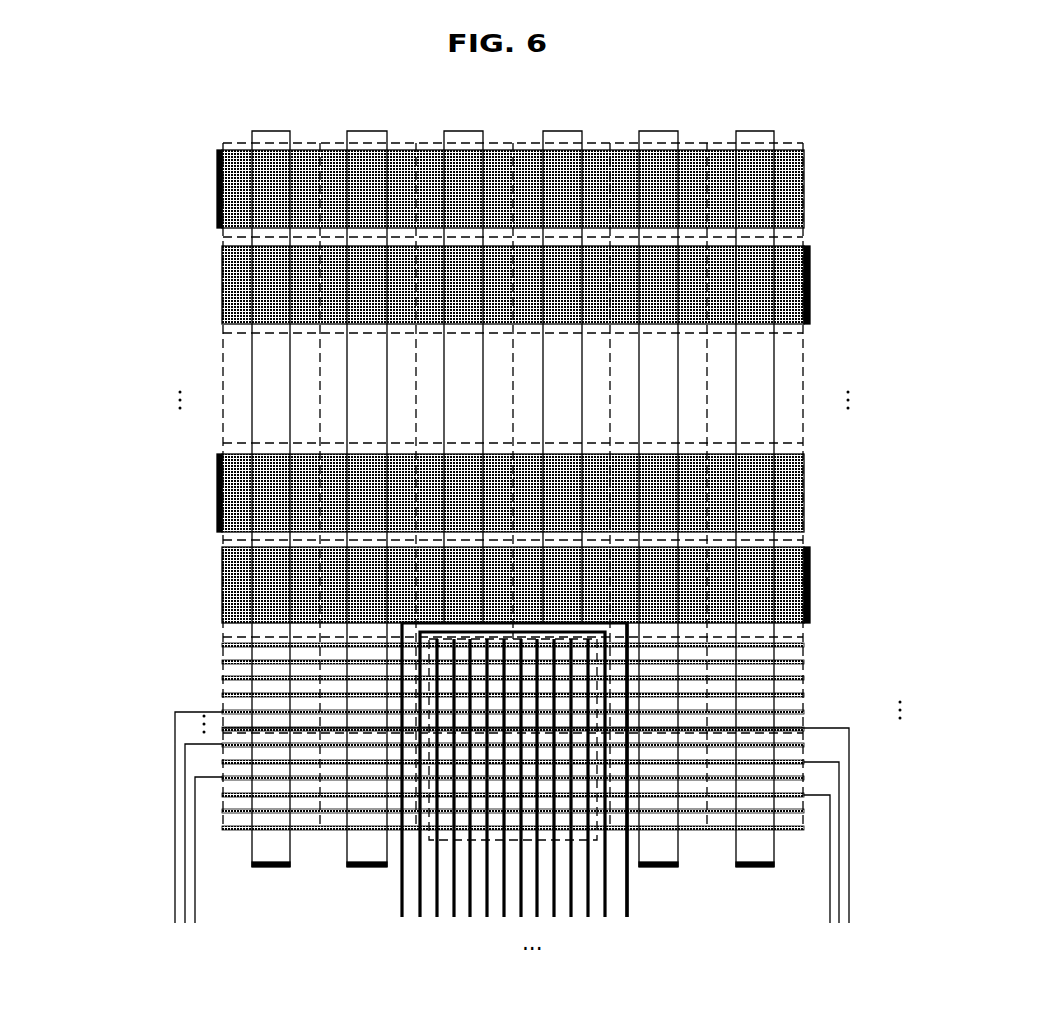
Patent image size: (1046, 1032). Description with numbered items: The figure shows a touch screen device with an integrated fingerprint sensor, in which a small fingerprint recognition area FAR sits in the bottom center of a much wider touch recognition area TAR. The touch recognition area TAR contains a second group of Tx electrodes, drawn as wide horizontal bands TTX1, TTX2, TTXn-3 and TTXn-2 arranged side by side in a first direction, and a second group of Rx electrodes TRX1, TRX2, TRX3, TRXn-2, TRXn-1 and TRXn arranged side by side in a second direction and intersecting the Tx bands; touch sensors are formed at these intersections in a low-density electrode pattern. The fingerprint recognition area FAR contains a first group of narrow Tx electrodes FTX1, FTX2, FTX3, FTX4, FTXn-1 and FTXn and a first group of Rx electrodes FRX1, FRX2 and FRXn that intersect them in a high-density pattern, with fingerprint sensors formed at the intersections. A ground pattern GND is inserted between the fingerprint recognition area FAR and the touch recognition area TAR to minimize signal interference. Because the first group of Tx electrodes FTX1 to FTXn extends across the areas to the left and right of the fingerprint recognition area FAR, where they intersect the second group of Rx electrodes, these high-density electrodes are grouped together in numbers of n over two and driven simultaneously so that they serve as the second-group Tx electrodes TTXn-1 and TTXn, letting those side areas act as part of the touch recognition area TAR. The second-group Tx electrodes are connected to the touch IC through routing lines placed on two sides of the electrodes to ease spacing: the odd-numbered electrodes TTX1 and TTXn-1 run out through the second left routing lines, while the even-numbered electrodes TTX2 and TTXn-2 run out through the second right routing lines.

The Tx electrode of the second group TTX1 is at (134, 923).
The Tx electrode of the second group TTX2 is at (891, 923).
The Tx electrode of the second group TTXn-3 is at (144, 923).
The Tx electrode of the second group TTXn-2 is at (880, 923).
The Tx electrode of the second group TTXn-1 is at (222, 738).
The Tx electrode of the second group TTXn is at (902, 738).
The touch recognition area TAR is at (913, 150).
The ground pattern GND is at (513, 632).
The fingerprint recognition area FAR is at (513, 840).
The Tx electrode of the first group FTX1 is at (155, 923).
The Tx electrode of the first group FTX2 is at (869, 923).
The Tx electrode of the first group FTX3 is at (165, 923).
The Tx electrode of the first group FTX4 is at (856, 923).
The Tx electrode of the first group FTXn-1 is at (205, 923).
The Tx electrode of the first group FTXn is at (818, 923).
The Rx electrode of the second group TRX1 is at (271, 867).
The Rx electrode of the second group TRX2 is at (367, 867).
The Rx electrode of the second group TRX3 is at (506, 552).
The Rx electrode of the second group TRXn-2 is at (590, 563).
The Rx electrode of the second group TRXn-1 is at (658, 867).
The Rx electrode of the second group TRXn is at (755, 867).
The Rx electrode of the first group FRX1 is at (434, 805).
The Rx electrode of the first group FRX2 is at (460, 805).
The Rx electrode of the first group FRXn is at (589, 805).